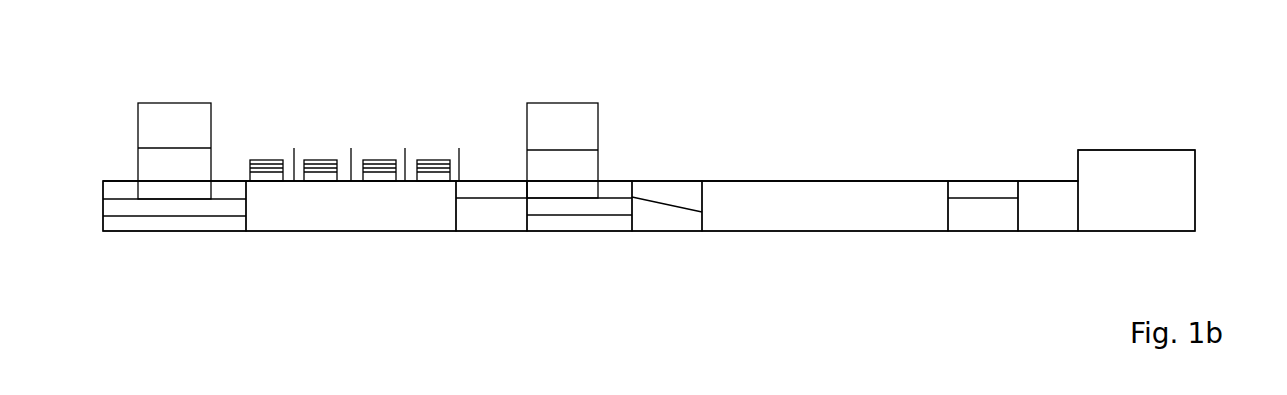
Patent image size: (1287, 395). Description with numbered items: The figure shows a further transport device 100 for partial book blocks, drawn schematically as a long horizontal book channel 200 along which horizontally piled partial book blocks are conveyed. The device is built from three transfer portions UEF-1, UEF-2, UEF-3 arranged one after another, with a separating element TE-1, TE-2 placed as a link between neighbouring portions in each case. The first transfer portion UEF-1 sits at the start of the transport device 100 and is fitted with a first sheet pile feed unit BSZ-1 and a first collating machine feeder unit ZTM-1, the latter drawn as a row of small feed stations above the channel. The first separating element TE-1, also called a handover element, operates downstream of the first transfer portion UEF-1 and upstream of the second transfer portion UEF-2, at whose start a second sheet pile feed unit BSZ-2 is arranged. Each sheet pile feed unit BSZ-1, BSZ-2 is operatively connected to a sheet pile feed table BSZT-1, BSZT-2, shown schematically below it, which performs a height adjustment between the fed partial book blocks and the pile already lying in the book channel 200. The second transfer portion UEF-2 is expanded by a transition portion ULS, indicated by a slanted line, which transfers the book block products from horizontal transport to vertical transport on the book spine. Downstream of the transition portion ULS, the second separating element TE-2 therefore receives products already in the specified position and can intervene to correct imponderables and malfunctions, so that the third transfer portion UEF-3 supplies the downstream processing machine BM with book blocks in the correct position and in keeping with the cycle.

The transport device 100 is at (867, 137).
The book channel 200 is at (472, 171).
The sheet pile feed table BSZT-1 is at (177, 243).
The sheet pile feed unit BSZ-1 is at (178, 128).
The first transfer portion UEF-1 is at (338, 220).
The first collating machine feeder unit ZTM-1 is at (365, 115).
The first separating element TE-1 is at (496, 222).
The sheet pile feed table BSZT-2 is at (576, 242).
The second sheet pile feed unit BSZ-2 is at (565, 130).
The transition portion ULS is at (668, 184).
The second transfer portion UEF-2 is at (822, 220).
The second separating element TE-2 is at (997, 218).
The third transfer portion UEF-3 is at (1052, 218).
The processing machine BM is at (1106, 165).